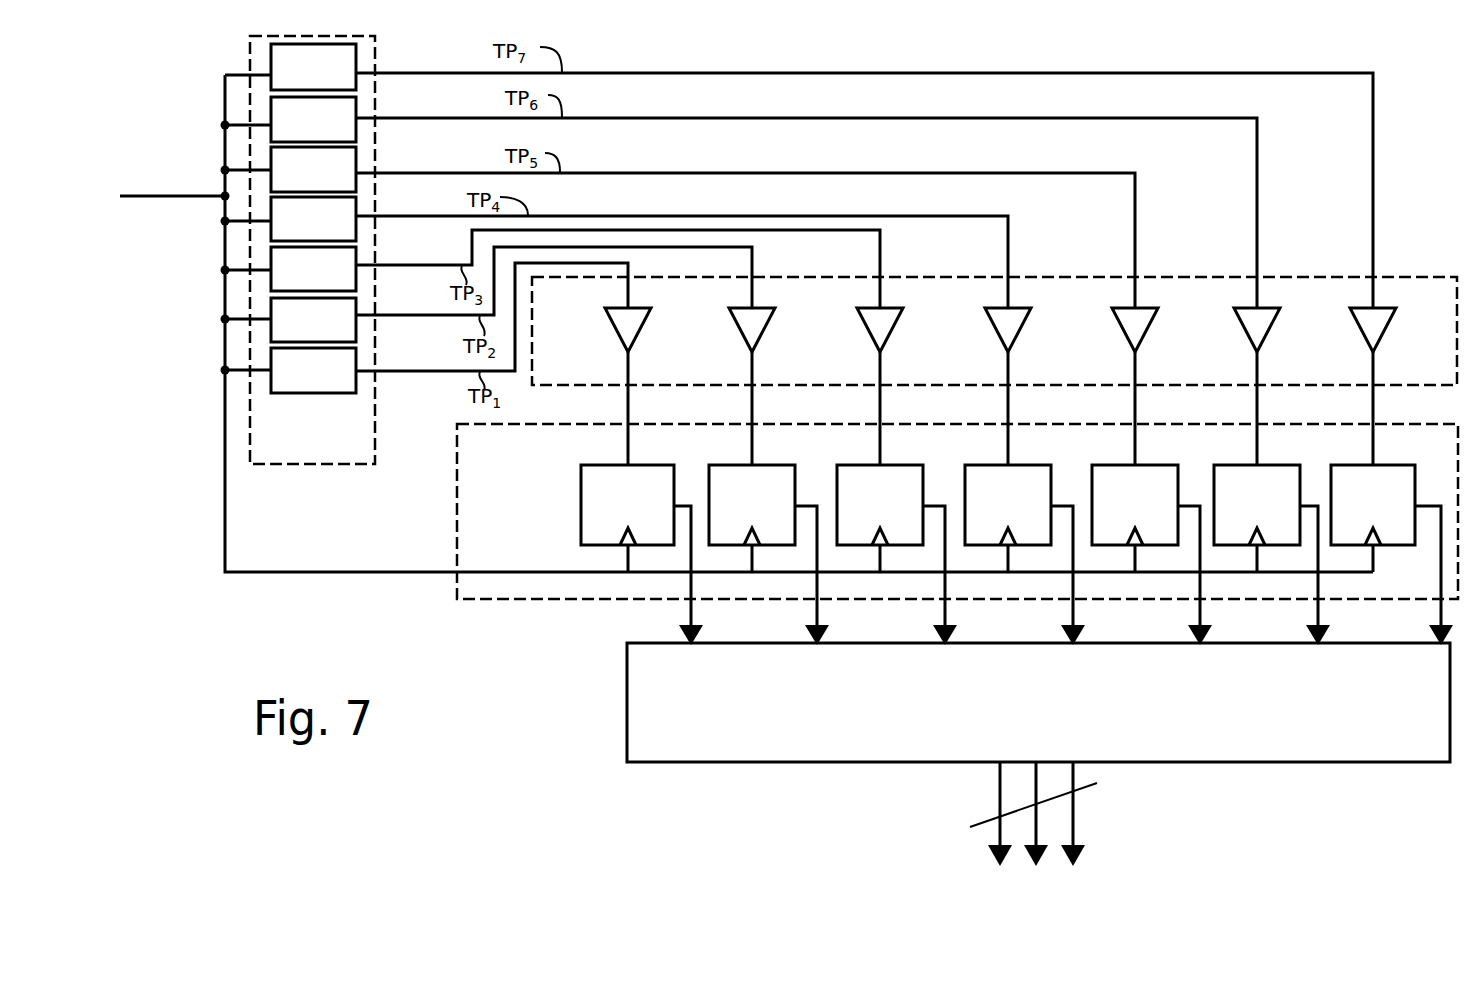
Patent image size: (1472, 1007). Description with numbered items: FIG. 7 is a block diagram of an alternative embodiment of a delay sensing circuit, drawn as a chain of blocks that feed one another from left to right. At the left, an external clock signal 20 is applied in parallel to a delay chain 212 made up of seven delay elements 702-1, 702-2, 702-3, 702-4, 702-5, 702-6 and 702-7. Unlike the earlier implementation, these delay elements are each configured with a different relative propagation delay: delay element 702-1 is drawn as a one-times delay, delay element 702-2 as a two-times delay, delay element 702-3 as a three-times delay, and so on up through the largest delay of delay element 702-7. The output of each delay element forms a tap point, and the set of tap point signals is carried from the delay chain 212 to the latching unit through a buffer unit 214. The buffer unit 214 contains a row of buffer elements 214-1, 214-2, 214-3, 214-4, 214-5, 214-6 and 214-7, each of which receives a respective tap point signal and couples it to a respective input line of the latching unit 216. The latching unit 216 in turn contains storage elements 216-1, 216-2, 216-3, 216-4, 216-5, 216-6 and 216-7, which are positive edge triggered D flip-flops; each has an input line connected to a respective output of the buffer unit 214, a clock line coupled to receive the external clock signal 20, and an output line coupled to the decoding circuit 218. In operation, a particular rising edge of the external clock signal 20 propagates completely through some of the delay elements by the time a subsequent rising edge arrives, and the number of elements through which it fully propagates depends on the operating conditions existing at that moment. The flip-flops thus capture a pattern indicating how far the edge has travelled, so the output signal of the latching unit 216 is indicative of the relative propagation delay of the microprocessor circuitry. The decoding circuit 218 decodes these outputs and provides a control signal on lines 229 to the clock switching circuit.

The clock signal CLK 20 is at (175, 185).
The delay chain 212 is at (300, 466).
The delay element 702-1 is at (357, 382).
The delay element 702-2 is at (357, 330).
The delay element 702-3 is at (357, 275).
The delay element 702-4 is at (357, 228).
The delay element 702-5 is at (357, 180).
The delay element 702-6 is at (357, 130).
The delay element 702-7 is at (357, 80).
The buffer unit 214 is at (1050, 277).
The buffer element 214-1 is at (633, 308).
The buffer element 214-2 is at (757, 308).
The buffer element 214-3 is at (885, 308).
The buffer element 214-4 is at (1013, 308).
The buffer element 214-5 is at (1140, 308).
The buffer element 214-6 is at (1262, 308).
The buffer element 214-7 is at (1378, 308).
The latching unit 216 is at (457, 508).
The storage element 216-1 is at (632, 463).
The storage element 216-2 is at (756, 463).
The storage element 216-3 is at (884, 463).
The storage element 216-4 is at (1012, 463).
The storage element 216-5 is at (1139, 463).
The storage element 216-6 is at (1261, 463).
The storage element 216-7 is at (1375, 463).
The decoding circuit 218 is at (612, 705).
The lines 229 is at (1003, 838).